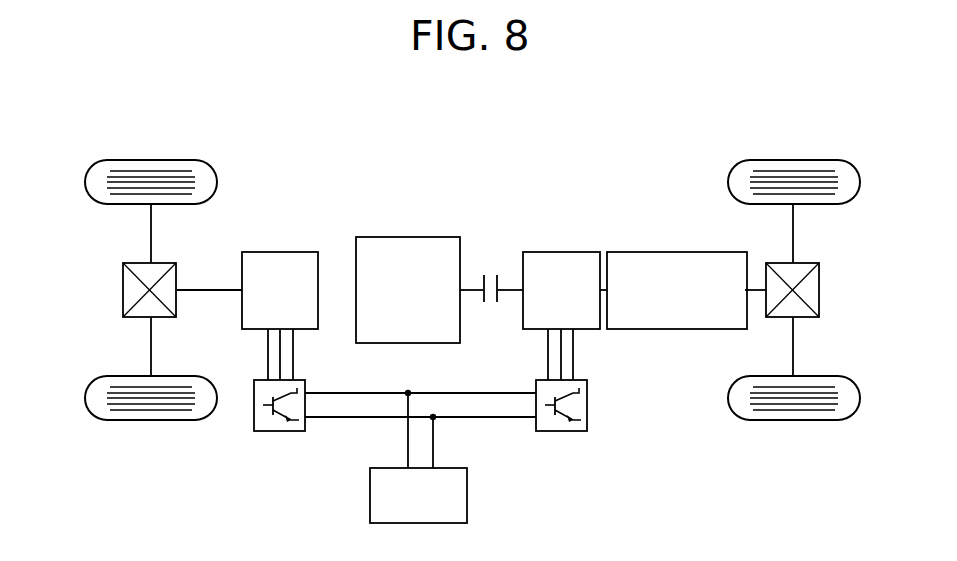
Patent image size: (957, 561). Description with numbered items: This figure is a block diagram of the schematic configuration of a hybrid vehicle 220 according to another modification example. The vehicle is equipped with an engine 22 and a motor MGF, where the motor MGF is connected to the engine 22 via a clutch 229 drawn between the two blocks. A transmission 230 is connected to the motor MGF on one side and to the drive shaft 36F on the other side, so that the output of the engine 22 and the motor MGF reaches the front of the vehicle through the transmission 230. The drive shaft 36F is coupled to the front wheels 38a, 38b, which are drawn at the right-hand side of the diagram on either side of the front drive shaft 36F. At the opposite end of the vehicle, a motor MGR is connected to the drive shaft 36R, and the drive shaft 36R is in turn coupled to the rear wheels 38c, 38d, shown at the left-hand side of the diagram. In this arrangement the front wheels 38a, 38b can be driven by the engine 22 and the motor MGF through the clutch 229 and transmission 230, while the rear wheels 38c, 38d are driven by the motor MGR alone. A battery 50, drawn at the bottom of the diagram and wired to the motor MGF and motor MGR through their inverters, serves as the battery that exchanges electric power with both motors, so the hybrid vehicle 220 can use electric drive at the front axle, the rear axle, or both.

The hybrid vehicle 220 is at (568, 134).
The engine 22 is at (408, 234).
The clutch 229 is at (491, 271).
The transmission 230 is at (665, 250).
The drive shaft 36R is at (200, 283).
The drive shaft 36F is at (756, 282).
The front wheel 38a is at (792, 158).
The front wheel 38b is at (792, 421).
The rear wheel 38c is at (148, 158).
The rear wheel 38d is at (152, 421).
The battery 50 is at (469, 494).
The motor MGR is at (280, 250).
The motor MGF is at (562, 250).